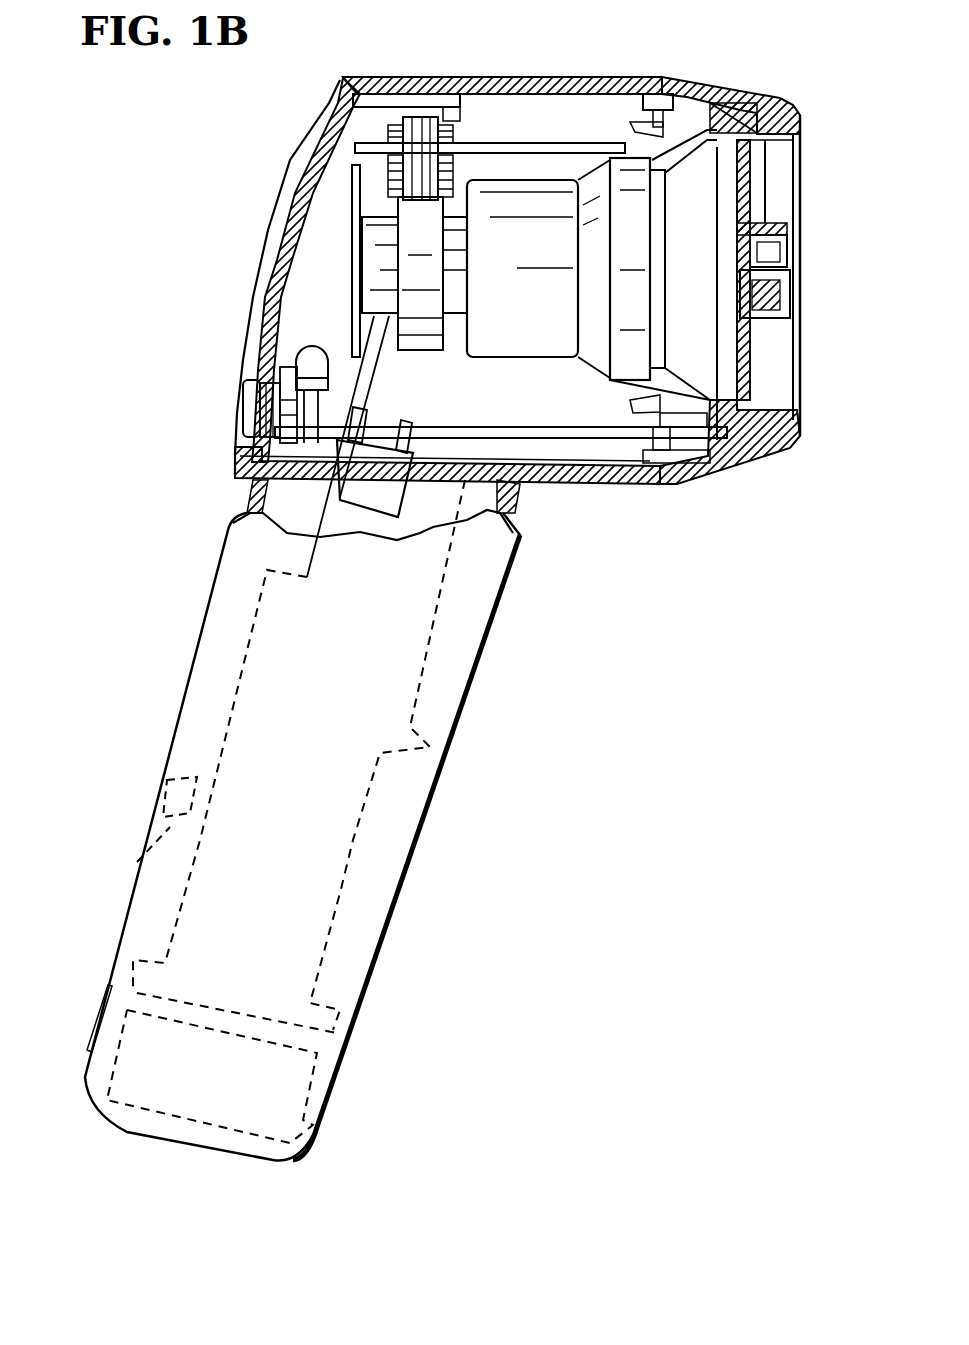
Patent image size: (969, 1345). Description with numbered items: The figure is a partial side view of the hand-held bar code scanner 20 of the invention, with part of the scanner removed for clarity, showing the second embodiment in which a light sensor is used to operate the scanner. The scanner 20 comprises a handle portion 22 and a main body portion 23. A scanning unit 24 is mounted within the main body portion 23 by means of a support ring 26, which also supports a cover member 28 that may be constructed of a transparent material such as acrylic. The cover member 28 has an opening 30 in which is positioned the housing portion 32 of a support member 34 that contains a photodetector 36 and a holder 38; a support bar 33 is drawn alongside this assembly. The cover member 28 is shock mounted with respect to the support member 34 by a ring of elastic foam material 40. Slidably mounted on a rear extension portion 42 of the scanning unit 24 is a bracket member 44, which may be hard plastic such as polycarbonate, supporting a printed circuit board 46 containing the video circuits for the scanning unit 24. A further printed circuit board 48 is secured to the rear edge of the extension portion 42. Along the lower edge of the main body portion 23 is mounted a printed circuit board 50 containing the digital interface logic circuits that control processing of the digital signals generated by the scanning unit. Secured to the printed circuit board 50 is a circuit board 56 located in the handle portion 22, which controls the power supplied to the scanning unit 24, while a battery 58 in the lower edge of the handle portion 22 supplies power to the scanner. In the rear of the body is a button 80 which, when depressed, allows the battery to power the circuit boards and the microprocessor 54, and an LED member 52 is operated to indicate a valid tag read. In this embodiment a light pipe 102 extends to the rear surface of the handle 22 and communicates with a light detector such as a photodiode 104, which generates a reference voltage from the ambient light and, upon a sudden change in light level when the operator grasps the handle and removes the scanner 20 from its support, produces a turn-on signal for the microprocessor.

The hand-held scanner 20 is at (205, 188).
The handle portion 22 is at (443, 770).
The main body portion 23 is at (494, 77).
The scanning unit 24 is at (546, 328).
The support ring 26 is at (685, 98).
The cover member 28 is at (778, 103).
The opening 30 is at (790, 150).
The housing portion 32 is at (775, 223).
The support bar 33 is at (735, 250).
The support member 34 is at (752, 382).
The photodetector 36 is at (785, 247).
The holder 38 is at (785, 293).
The ring of elastic foam material 40 is at (753, 95).
The rear extension portion 42 is at (458, 322).
The bracket member 44 is at (404, 352).
The printed circuit board 46 is at (560, 142).
The printed circuit board 48 is at (348, 177).
The printed circuit board 50 is at (520, 427).
The LED member 52 is at (307, 353).
The microprocessor 54 is at (273, 303).
The circuit board 56 is at (343, 897).
The battery 58 is at (320, 1133).
The button 80 is at (242, 417).
The light pipe 102 is at (160, 808).
The photodiode 104 is at (137, 862).